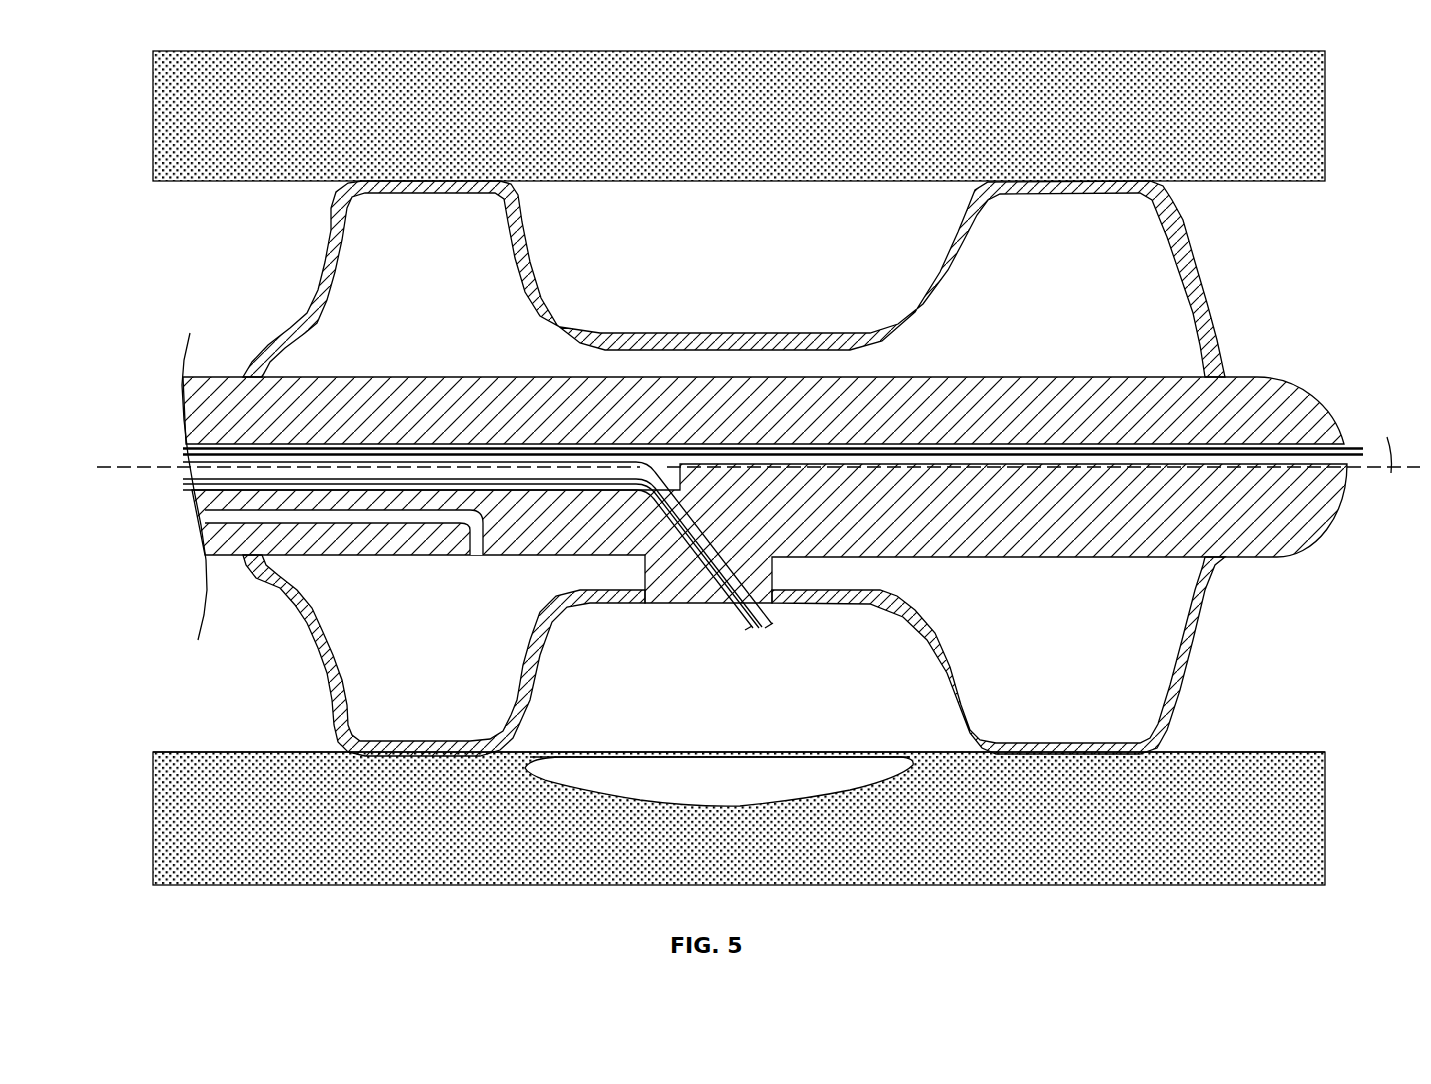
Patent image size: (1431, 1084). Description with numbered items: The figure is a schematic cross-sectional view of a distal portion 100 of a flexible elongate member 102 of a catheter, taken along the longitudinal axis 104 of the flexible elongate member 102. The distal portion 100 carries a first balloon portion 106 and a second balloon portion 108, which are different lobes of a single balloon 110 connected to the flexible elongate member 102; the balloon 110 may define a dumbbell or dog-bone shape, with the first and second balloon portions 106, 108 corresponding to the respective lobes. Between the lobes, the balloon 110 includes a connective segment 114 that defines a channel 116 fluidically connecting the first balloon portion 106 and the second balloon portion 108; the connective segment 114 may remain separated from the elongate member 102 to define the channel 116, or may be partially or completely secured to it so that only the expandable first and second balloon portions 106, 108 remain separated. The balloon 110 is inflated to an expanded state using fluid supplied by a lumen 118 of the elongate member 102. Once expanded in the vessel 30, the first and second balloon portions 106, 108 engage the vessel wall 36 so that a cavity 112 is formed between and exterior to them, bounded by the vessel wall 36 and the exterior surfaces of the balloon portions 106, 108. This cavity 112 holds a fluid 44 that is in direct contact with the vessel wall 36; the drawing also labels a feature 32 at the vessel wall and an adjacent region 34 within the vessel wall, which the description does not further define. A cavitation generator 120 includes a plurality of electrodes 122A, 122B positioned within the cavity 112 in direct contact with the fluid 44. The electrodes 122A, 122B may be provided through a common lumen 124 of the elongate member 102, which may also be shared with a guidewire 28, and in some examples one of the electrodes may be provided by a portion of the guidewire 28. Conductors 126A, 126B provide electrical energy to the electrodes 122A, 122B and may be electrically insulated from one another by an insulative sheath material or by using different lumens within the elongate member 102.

The guidewire 28 is at (1368, 450).
The vessel 30 is at (178, 770).
The mold surface 32 is at (632, 740).
The cavity 34 is at (747, 795).
The vessel wall 36 is at (268, 740).
The fluid 44 is at (853, 713).
The distal portion 100 is at (212, 266).
The flexible elongate member 102 is at (1280, 364).
The longitudinal axis 104 is at (130, 466).
The first balloon portion 106 is at (316, 206).
The second balloon portion 108 is at (952, 201).
The balloon 110 is at (302, 332).
The cavity 112 is at (676, 254).
The connective segment 114 is at (716, 322).
The channel 116 is at (822, 352).
The lumen 118 is at (200, 515).
The cavitation generator 120 is at (730, 625).
The electrode 122A is at (750, 628).
The electrode 122B is at (771, 629).
The common lumen 124 is at (176, 474).
The conductor 126A is at (190, 481).
The conductor 126B is at (185, 456).